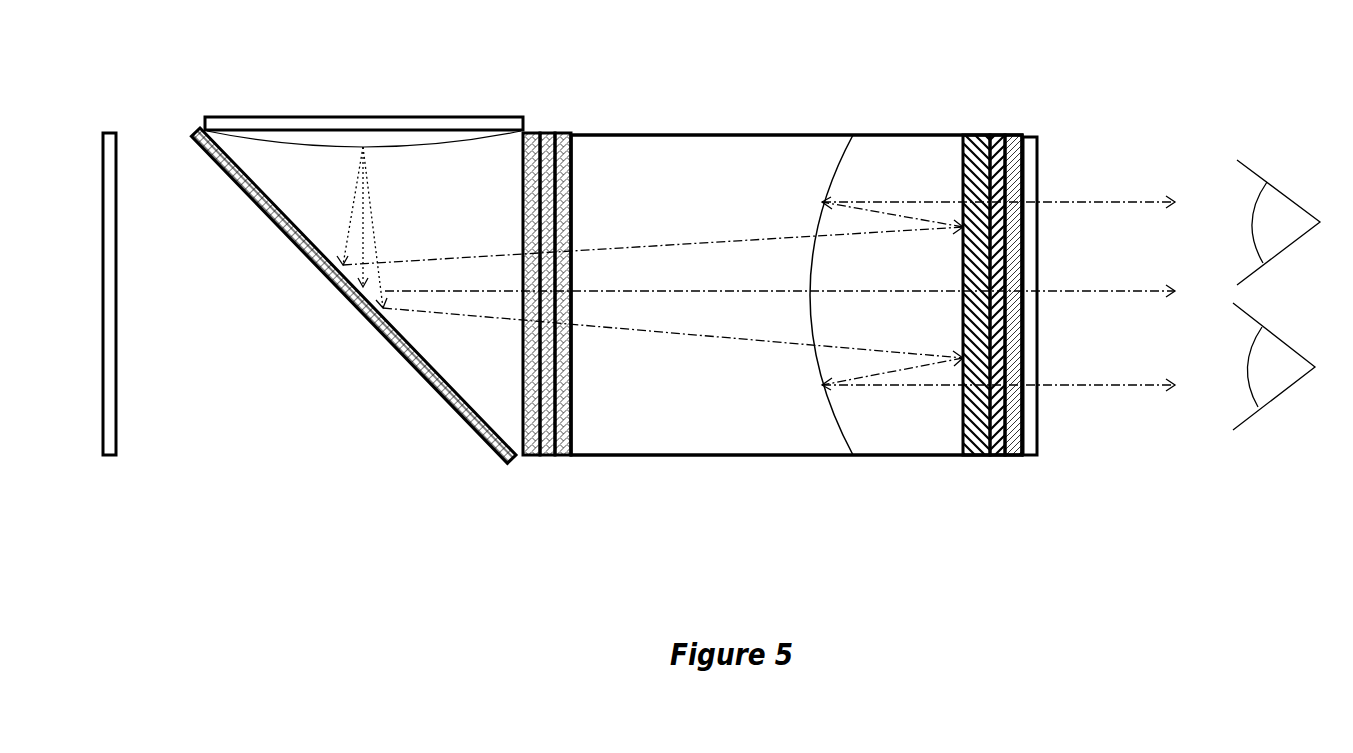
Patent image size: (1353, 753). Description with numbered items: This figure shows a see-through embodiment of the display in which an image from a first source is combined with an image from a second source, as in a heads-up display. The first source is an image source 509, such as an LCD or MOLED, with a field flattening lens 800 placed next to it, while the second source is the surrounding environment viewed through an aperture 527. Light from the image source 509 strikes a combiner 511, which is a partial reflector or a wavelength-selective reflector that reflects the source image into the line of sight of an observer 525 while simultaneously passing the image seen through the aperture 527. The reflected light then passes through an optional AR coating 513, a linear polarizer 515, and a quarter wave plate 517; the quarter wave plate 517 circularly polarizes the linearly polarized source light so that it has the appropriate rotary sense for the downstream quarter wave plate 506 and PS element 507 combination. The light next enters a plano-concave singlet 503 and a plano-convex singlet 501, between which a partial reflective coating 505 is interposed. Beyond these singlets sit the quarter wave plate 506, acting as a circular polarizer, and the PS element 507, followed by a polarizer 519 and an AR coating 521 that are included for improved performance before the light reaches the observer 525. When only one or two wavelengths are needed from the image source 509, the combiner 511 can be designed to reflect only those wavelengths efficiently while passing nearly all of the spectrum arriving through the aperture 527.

The plano-convex singlet 501 is at (893, 138).
The plano-concave singlet 503 is at (641, 140).
The partial reflective coating 505 is at (822, 200).
The quarter wave plate 506 is at (975, 135).
The PS element 507 is at (1000, 135).
The image source 509 is at (380, 118).
The combiner 511 is at (437, 370).
The AR coating 513 is at (532, 133).
The linear polarizer 515 is at (547, 457).
The quarter wave plate 517 is at (570, 457).
The polarizer 519 is at (1013, 457).
The AR coating 521 is at (1040, 420).
The observer 525 is at (1270, 183).
The aperture 527 is at (108, 132).
The field flattening lens 800 is at (258, 133).